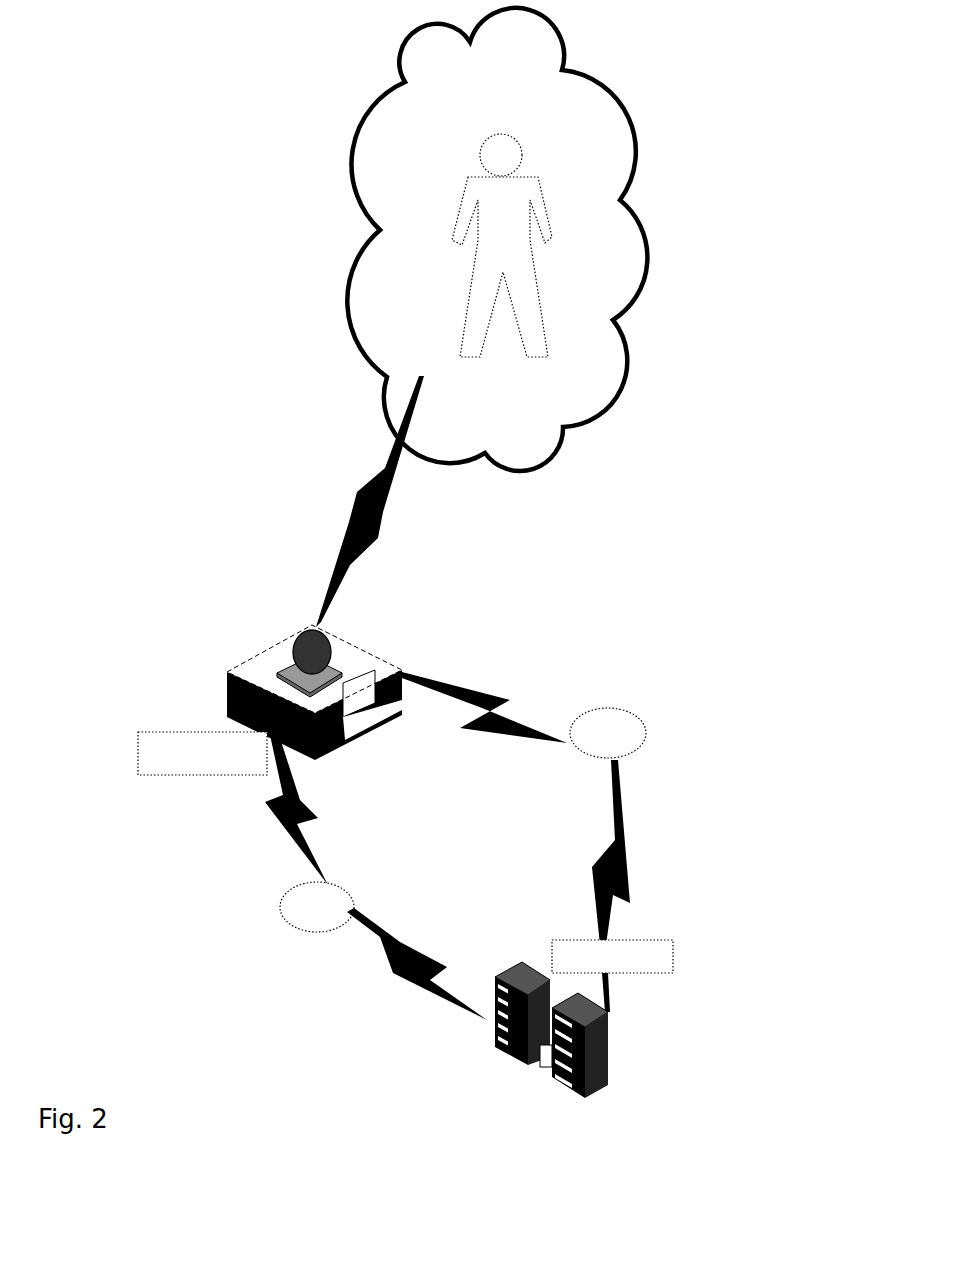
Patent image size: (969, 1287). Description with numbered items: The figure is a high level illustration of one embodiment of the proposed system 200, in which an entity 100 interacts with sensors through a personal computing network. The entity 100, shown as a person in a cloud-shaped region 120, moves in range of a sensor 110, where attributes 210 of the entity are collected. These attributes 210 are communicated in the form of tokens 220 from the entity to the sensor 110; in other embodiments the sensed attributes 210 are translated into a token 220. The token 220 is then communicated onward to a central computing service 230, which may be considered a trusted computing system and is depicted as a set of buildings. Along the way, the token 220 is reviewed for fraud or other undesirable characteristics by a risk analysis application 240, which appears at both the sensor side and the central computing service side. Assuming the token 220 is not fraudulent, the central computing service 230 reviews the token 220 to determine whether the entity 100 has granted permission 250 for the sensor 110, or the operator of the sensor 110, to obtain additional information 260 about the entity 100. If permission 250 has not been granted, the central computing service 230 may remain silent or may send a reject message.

The entity 100 is at (503, 212).
The sensor 110 is at (280, 663).
The entity domain cloud 120 is at (388, 140).
The system 200 is at (256, 310).
The attributes 210 is at (420, 513).
The token 220 is at (603, 708).
The central computing service 230 is at (533, 1065).
The risk analysis application 240 is at (160, 778).
The permission 250 is at (735, 1108).
The additional information 260 is at (717, 1072).